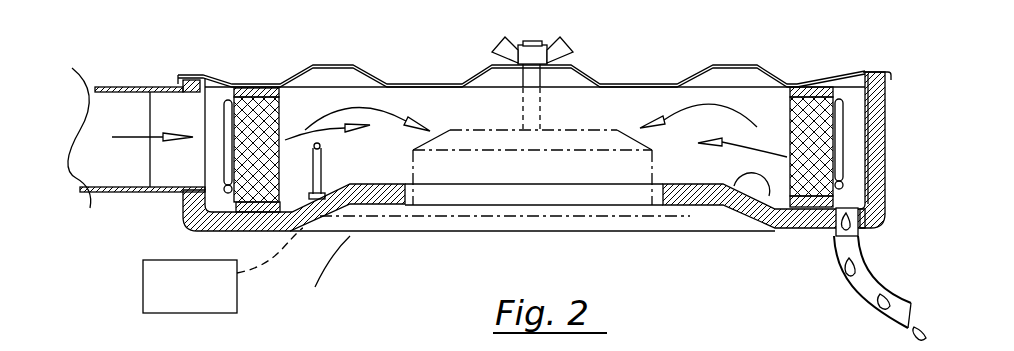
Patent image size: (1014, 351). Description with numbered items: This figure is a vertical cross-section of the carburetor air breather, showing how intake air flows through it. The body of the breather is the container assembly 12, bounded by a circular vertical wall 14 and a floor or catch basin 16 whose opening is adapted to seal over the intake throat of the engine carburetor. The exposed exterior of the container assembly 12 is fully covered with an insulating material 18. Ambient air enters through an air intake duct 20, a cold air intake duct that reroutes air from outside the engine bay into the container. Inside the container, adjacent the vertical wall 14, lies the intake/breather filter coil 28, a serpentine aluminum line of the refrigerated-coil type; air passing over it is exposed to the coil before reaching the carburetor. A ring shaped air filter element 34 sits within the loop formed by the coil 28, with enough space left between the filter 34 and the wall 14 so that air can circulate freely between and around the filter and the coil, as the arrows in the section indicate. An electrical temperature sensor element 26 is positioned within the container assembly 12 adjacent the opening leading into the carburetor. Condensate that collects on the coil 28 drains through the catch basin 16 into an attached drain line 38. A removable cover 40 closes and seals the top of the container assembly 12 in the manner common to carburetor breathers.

The container assembly 12 is at (798, 291).
The circular vertical wall 14 is at (863, 95).
The floor or catch basin 16 is at (700, 214).
The insulating material 18 is at (183, 210).
The air intake duct 20 is at (125, 86).
The electrical temperature sensor element 26 is at (312, 176).
The intake/breather filter coil 28 is at (844, 140).
The ring shaped air filter element 34 is at (280, 107).
The drain line 38 is at (870, 270).
The removable cover 40 is at (388, 72).